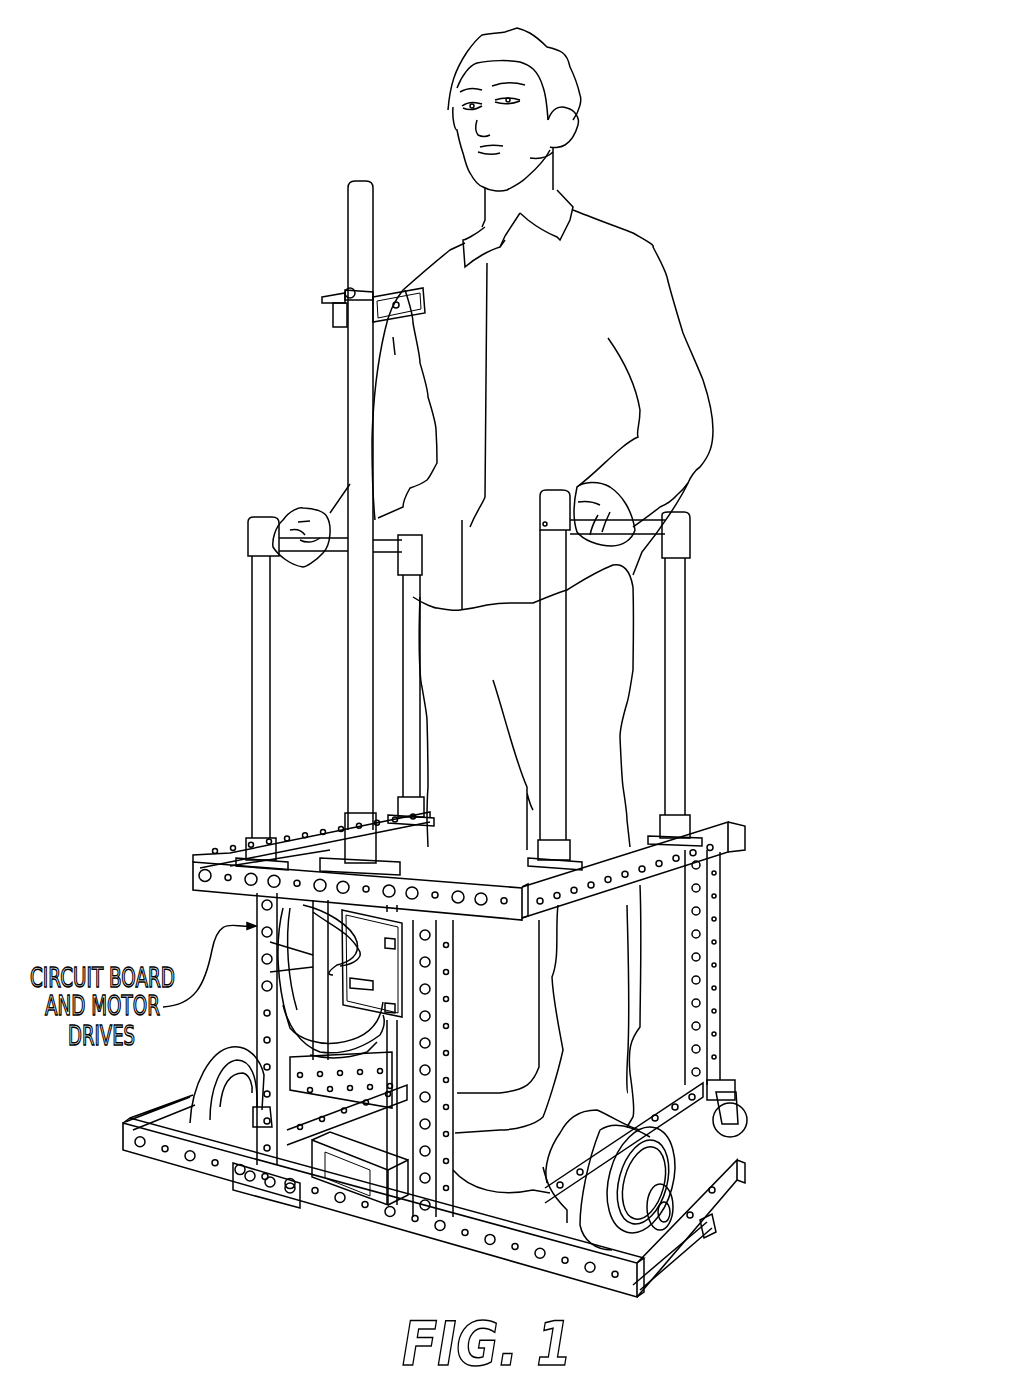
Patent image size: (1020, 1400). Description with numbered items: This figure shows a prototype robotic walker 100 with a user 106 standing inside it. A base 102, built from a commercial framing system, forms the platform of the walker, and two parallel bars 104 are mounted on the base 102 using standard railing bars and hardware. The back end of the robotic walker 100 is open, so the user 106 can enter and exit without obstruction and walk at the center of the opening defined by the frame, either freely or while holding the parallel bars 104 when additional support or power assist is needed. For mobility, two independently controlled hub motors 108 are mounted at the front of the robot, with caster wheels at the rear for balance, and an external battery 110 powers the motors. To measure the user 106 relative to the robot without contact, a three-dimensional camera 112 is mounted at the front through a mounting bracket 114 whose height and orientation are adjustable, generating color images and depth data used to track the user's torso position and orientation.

The robotic walker 100 is at (363, 22).
The base 102 is at (727, 932).
The parallel bars 104 is at (277, 517).
The user 106 is at (686, 312).
The hub motors 108 is at (735, 1192).
The battery 110 is at (350, 1190).
The 3D camera 112 is at (322, 311).
The mounting bracket 114 is at (346, 287).